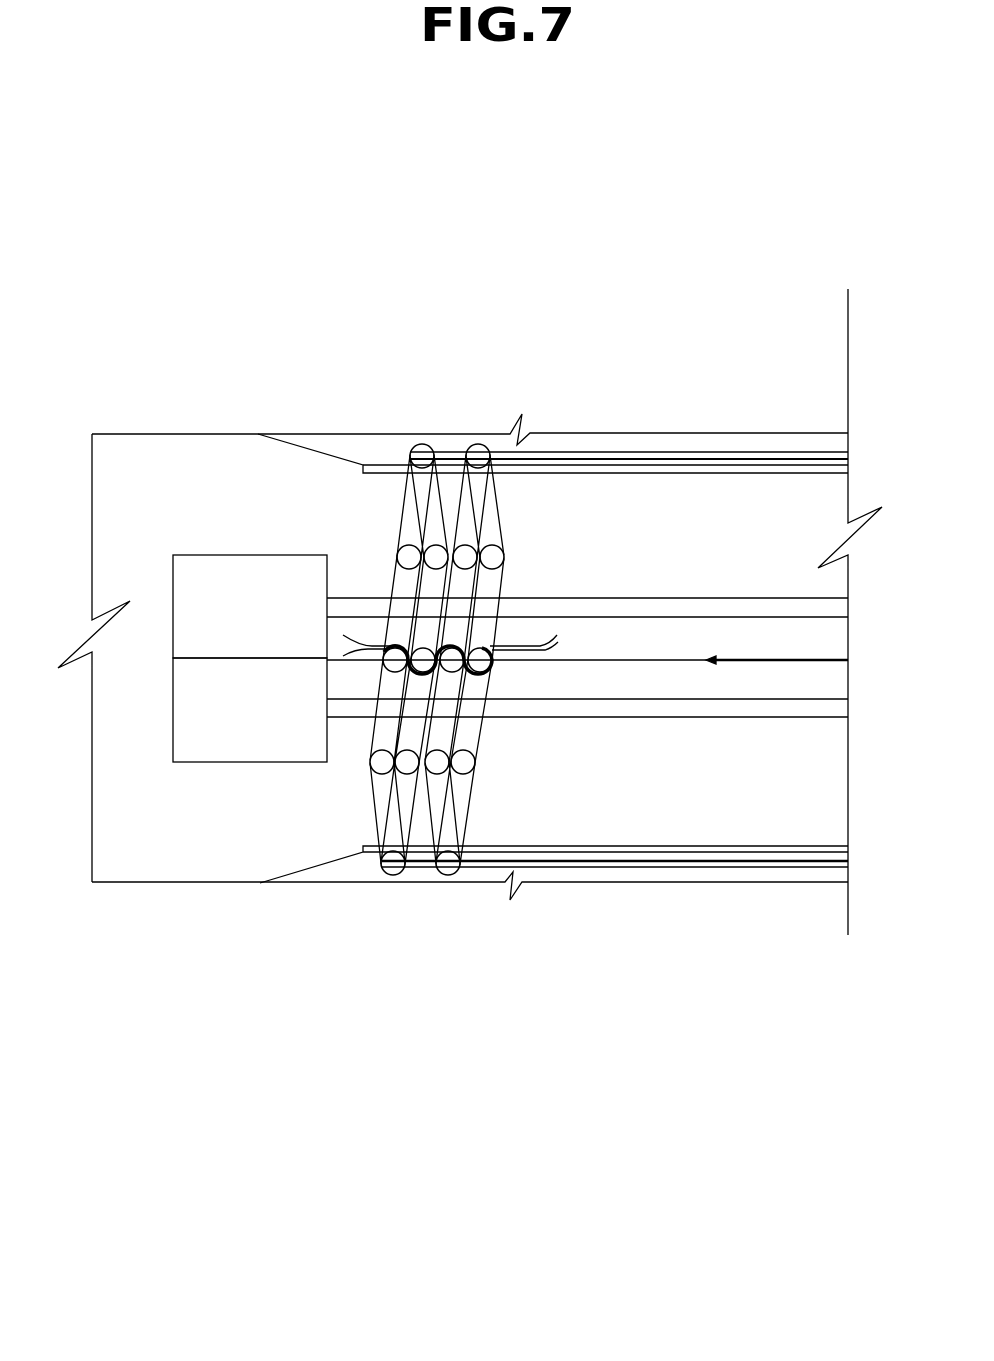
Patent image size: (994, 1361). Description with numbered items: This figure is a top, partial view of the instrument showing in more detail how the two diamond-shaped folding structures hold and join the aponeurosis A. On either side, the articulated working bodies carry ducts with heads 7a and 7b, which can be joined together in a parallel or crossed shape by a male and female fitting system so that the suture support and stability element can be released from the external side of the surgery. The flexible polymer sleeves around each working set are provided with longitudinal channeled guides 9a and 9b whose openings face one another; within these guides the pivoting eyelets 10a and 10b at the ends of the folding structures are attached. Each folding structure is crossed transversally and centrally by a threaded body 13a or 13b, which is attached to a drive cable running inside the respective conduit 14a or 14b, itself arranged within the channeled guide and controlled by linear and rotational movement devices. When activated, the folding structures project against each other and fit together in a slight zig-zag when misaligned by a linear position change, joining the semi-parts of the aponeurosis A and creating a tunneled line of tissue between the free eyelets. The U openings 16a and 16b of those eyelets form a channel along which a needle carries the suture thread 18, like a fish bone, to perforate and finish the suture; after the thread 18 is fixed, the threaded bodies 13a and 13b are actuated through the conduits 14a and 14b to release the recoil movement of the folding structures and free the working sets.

The duct with head 7a is at (212, 588).
The duct with head 7b is at (243, 730).
The longitudinal channeled guide 9a is at (388, 443).
The longitudinal channeled guide 9b is at (757, 880).
The pivoting eyelet 10a is at (425, 443).
The pivoting eyelet 10b is at (399, 878).
The threaded body 13a is at (452, 450).
The threaded body 13b is at (420, 872).
The conduit 14a is at (628, 452).
The conduit 14b is at (483, 872).
The U opening 16a is at (488, 678).
The U opening 16b is at (391, 651).
The suture thread 18 is at (628, 662).
The aponeurosis A is at (357, 647).